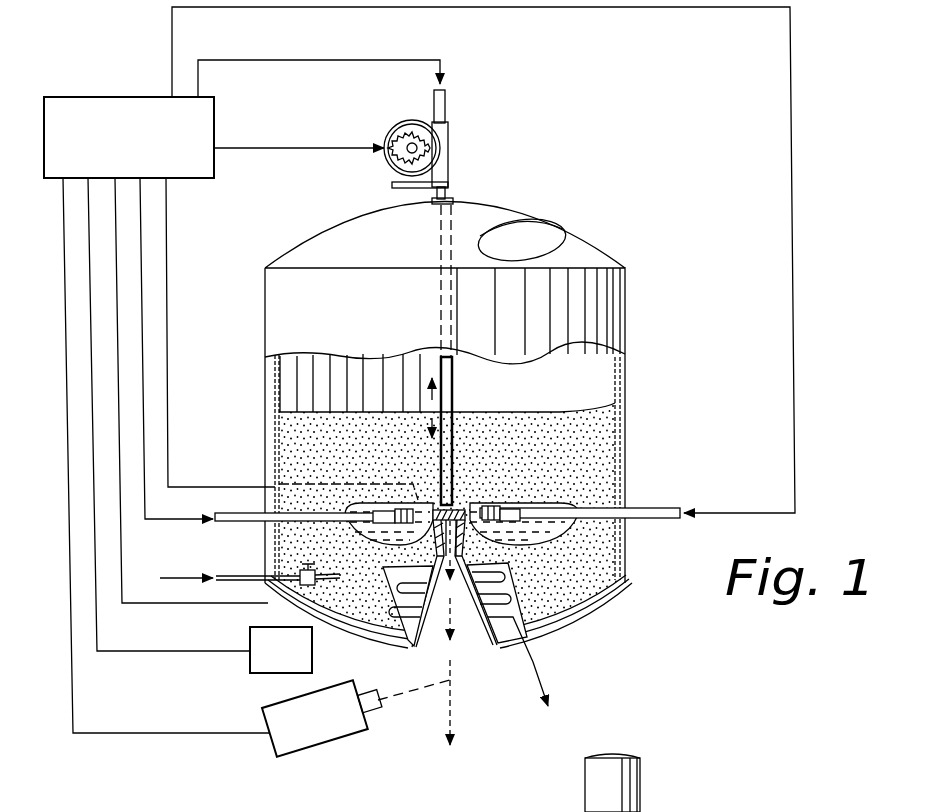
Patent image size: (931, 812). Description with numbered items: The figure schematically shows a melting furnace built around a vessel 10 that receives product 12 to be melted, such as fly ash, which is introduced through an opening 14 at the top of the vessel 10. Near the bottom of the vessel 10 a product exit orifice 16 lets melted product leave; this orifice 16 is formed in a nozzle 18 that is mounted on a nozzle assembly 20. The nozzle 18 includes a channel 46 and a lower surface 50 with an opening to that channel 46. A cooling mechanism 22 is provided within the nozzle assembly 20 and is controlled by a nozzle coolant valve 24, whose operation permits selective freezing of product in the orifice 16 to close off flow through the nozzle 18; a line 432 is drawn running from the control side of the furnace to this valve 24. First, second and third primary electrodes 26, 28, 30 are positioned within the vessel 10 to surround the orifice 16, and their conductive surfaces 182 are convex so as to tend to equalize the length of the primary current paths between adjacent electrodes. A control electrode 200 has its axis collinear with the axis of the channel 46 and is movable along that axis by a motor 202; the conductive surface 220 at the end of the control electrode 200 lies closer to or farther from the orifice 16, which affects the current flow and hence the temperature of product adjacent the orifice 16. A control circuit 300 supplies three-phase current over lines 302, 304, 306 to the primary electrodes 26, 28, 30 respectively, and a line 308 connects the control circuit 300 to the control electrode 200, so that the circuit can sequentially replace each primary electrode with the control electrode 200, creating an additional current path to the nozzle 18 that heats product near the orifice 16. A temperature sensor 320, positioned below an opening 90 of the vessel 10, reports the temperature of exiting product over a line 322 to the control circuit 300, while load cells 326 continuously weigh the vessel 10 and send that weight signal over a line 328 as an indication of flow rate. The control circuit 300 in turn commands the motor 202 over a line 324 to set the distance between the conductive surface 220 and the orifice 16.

The vessel 10 is at (634, 302).
The product 12 is at (585, 420).
The opening 14 is at (567, 243).
The product exit orifice 16 is at (452, 505).
The nozzle 18 is at (465, 540).
The nozzle assembly 20 is at (555, 625).
The cooling mechanism 22 is at (550, 632).
The nozzle coolant valve 24 is at (301, 570).
The first primary electrode 26 is at (607, 510).
The second primary electrode 28 is at (457, 505).
The third primary electrode 30 is at (243, 517).
The channel 46 is at (495, 542).
The lower surface 50 is at (455, 619).
The opening 90 is at (473, 640).
The conductive surfaces 182 is at (413, 503).
The control electrode 200 is at (453, 395).
The motor 202 is at (393, 122).
The conductive surface 220 is at (438, 510).
The control circuit 300 is at (133, 100).
The line 302 is at (803, 270).
The line 304 is at (166, 298).
The line 306 is at (143, 268).
The line 308 is at (318, 58).
The temperature sensor 320 is at (350, 752).
The line 322 is at (92, 733).
The line 324 is at (275, 151).
The load cells 326 is at (255, 672).
The line 328 is at (113, 651).
The control line to valve 432 is at (128, 604).